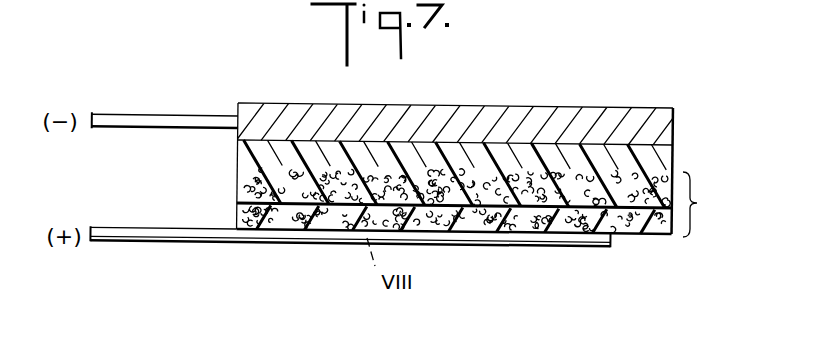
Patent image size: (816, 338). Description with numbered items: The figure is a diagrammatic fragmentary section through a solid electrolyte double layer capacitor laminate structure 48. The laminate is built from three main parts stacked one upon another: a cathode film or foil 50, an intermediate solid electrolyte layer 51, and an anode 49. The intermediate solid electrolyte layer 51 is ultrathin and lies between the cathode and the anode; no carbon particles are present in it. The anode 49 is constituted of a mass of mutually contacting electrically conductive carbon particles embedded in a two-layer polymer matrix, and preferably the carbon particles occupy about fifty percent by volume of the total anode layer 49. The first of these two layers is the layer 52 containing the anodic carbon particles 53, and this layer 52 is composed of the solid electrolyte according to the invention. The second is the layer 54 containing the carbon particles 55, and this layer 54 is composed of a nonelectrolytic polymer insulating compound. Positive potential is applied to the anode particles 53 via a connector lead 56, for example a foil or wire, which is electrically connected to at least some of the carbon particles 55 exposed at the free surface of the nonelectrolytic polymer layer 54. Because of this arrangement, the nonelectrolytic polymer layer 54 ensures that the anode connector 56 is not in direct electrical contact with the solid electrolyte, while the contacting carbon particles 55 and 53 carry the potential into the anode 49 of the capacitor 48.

The solid electrolyte capacitor laminate structure 48 is at (541, 97).
The anode 49 is at (706, 204).
The cathode film or foil 50 is at (663, 120).
The intermediate solid electrolyte layer 51 is at (661, 157).
The layer containing anodic carbon particles 52 is at (578, 205).
The anodic carbon particles 53 is at (238, 182).
The nonelectrolytic polymer layer 54 is at (652, 232).
The carbon particles 55 is at (238, 214).
The connector lead 56 is at (266, 243).